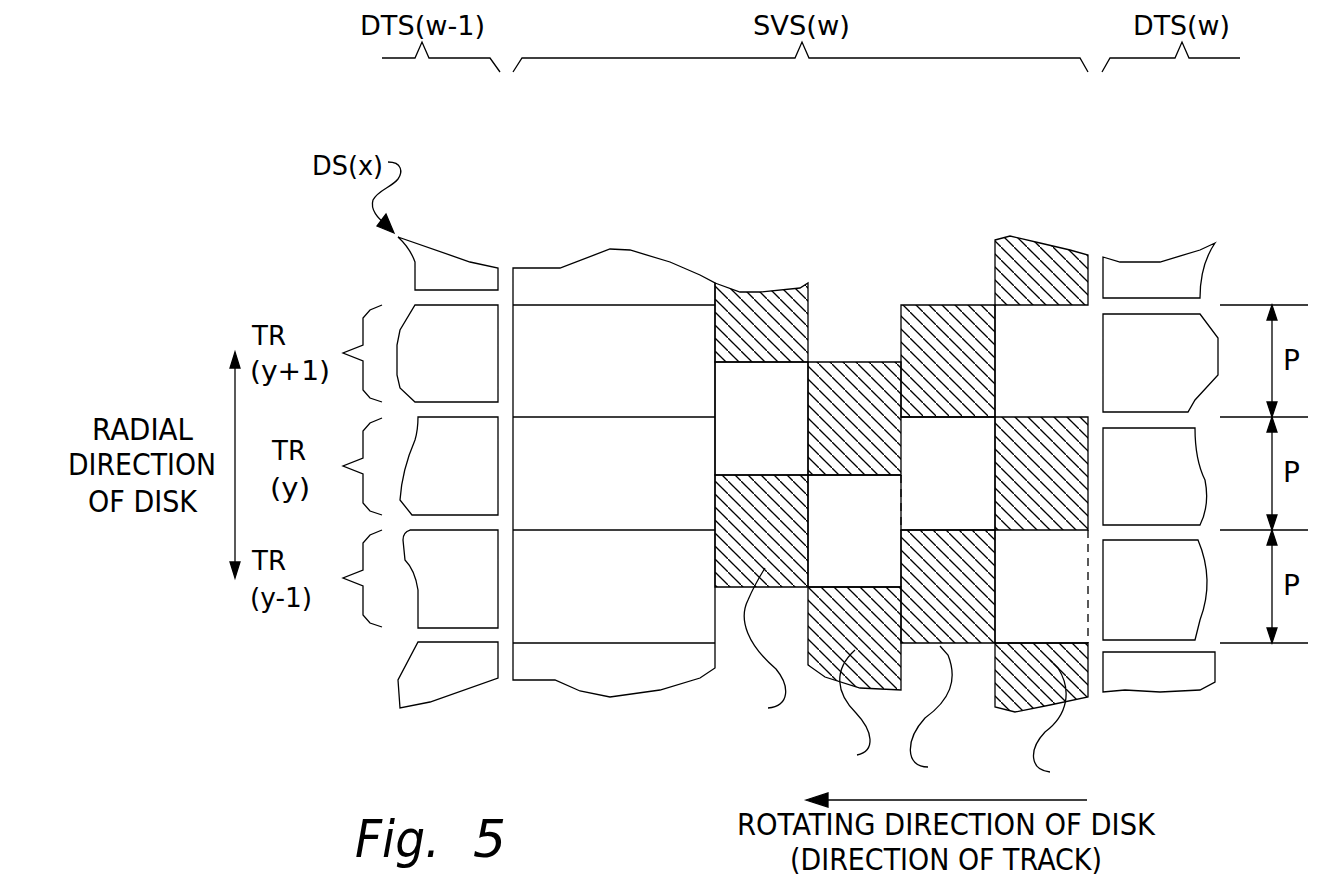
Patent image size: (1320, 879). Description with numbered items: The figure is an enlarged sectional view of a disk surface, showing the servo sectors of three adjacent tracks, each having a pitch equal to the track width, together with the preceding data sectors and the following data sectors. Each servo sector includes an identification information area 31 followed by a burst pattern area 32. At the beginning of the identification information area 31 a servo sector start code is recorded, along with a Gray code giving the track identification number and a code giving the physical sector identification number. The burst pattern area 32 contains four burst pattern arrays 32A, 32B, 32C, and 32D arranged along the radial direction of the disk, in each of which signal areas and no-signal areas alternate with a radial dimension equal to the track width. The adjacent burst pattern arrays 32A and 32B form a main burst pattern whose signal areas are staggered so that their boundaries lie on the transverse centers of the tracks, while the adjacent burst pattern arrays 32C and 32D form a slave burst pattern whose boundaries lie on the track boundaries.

The identification information area 31 is at (715, 150).
The burst pattern area 32 is at (1088, 148).
The burst pattern array 32A is at (808, 228).
The burst pattern array 32B is at (901, 228).
The burst pattern array 32C is at (995, 228).
The burst pattern array 32D is at (1088, 228).